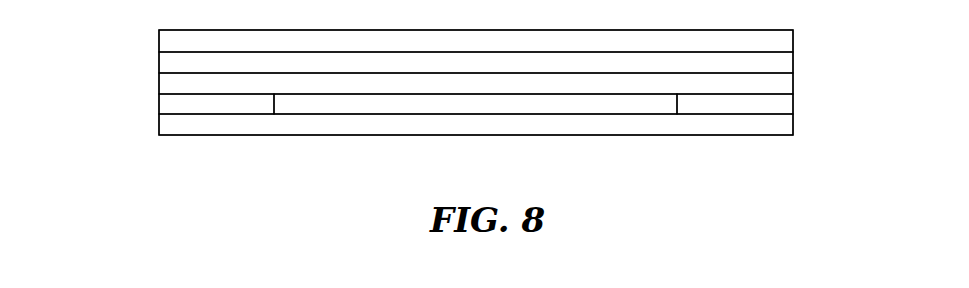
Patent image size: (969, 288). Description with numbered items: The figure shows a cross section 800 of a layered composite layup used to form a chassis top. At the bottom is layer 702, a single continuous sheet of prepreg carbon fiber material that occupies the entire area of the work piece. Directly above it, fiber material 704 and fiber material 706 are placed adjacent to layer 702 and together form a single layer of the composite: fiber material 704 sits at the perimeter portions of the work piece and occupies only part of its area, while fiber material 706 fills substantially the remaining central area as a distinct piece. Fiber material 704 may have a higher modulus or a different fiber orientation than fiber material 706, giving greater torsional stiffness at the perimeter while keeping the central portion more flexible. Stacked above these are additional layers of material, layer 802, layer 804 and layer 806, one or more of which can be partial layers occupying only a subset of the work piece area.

The layered assembly 800 is at (243, 212).
The layer 806 is at (771, 44).
The layer 804 is at (772, 64).
The layer 802 is at (772, 83).
The fiber material 704 is at (780, 103).
The fiber material 706 is at (562, 103).
The layer 702 is at (738, 122).